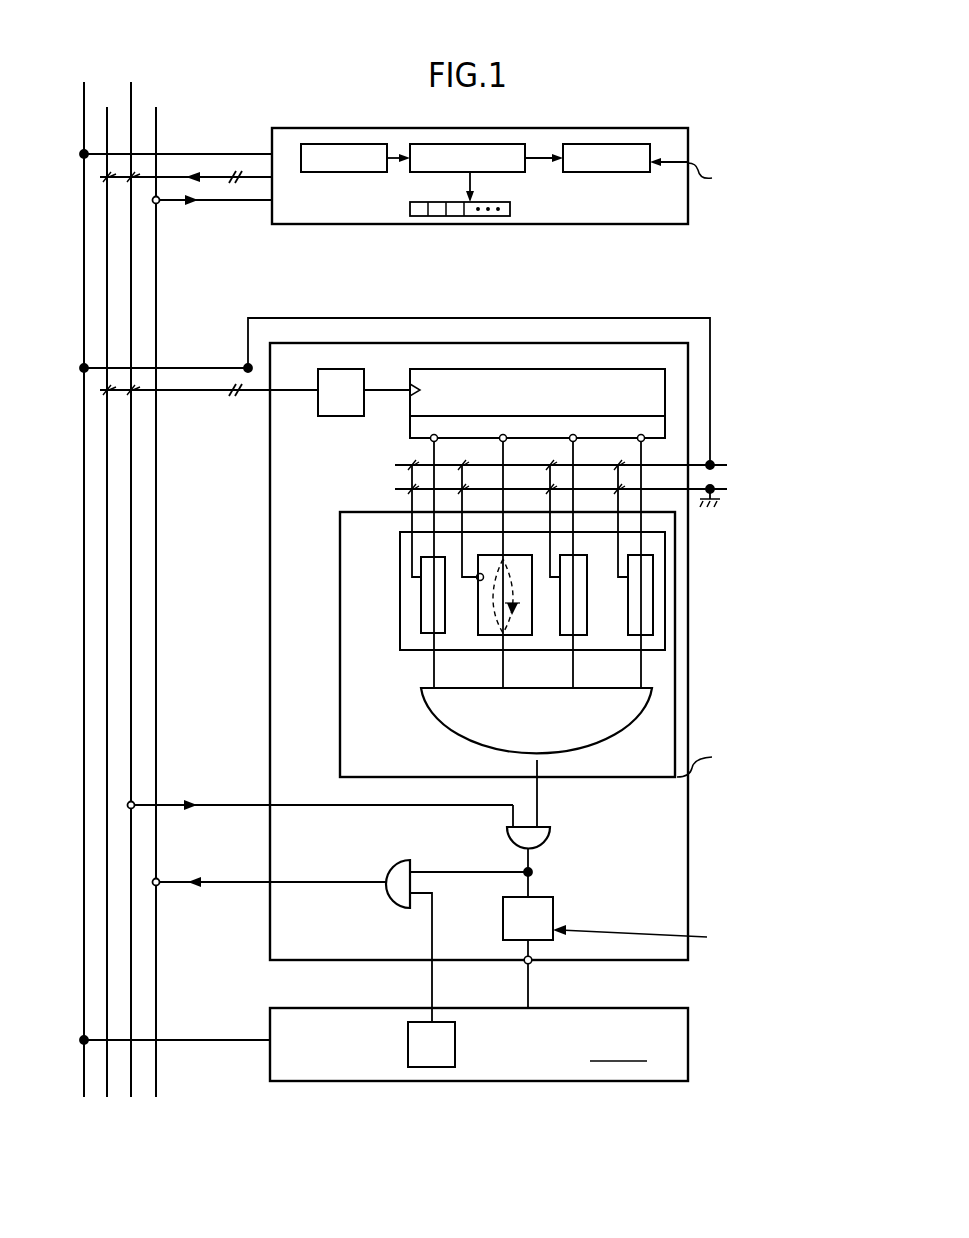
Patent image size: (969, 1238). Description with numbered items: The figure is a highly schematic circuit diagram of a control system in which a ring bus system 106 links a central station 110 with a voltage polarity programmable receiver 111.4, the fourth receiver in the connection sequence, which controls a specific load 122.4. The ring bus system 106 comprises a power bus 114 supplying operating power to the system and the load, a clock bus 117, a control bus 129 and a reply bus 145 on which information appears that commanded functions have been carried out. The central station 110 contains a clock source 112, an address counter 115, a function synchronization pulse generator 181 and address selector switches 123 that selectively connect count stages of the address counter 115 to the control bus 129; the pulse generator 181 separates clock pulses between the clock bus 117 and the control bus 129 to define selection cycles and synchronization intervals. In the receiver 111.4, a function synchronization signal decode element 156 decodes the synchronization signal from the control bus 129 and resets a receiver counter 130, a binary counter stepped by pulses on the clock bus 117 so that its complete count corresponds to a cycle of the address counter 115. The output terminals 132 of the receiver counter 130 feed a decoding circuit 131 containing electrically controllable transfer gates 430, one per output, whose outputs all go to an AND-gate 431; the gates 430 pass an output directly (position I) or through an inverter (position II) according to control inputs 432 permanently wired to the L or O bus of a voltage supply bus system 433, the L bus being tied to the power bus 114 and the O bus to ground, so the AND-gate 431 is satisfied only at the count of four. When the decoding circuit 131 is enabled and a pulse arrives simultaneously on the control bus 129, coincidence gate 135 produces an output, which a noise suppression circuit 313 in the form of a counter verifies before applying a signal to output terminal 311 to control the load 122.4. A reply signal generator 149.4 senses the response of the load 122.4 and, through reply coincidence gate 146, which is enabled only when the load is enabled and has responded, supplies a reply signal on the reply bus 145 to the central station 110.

The ring bus system 106 is at (157, 63).
The power bus 114 is at (182, 1197).
The clock bus 117 is at (182, 1172).
The control bus 129 is at (182, 1147).
The reply bus 145 is at (182, 1120).
The central station 110 is at (690, 138).
The clock source 112 is at (318, 144).
The address counter 115 is at (410, 146).
The function synchronization pulse generator 181 is at (606, 158).
The address selector switches 123 is at (512, 209).
The receiver 111.4 is at (680, 847).
The function synchronization signal decode element 156 is at (327, 405).
The receiver counter 130 is at (660, 366).
The output terminals 132 is at (413, 428).
The voltage supply bus system 433 is at (745, 453).
The decoding circuit 131 is at (348, 530).
The electrically controllable gates 430 is at (430, 618).
The control inputs 432 is at (478, 580).
The AND-gate 431 is at (428, 714).
The coincidence gate 135 is at (545, 835).
The reply coincidence gate 146 is at (390, 870).
The noise suppression circuit 313 is at (553, 913).
The output terminal 311 is at (532, 964).
The load 122.4 is at (680, 1027).
The reply signal generator 149.4 is at (448, 1048).